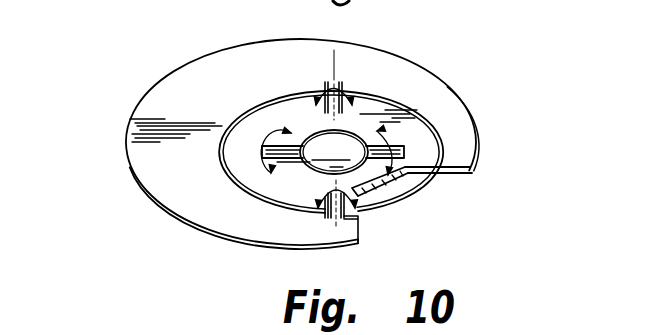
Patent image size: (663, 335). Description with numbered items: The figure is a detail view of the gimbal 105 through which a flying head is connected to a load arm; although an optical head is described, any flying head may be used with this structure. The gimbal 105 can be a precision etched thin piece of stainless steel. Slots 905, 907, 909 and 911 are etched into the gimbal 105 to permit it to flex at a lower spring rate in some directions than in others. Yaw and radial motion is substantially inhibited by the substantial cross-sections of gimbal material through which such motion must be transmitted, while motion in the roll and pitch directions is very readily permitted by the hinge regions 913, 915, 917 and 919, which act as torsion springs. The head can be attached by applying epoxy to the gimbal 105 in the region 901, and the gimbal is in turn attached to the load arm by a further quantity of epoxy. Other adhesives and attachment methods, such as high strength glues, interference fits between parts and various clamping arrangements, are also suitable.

The gimbal 105 is at (472, 111).
The region 901 is at (348, 161).
The slot 905 is at (408, 110).
The slot 907 is at (236, 186).
The slot 909 is at (303, 128).
The slot 911 is at (377, 176).
The hinge region 913 is at (262, 152).
The hinge region 915 is at (404, 148).
The hinge region 917 is at (348, 222).
The hinge region 919 is at (337, 83).